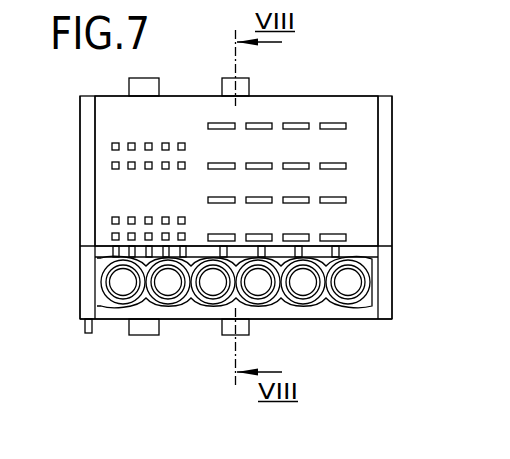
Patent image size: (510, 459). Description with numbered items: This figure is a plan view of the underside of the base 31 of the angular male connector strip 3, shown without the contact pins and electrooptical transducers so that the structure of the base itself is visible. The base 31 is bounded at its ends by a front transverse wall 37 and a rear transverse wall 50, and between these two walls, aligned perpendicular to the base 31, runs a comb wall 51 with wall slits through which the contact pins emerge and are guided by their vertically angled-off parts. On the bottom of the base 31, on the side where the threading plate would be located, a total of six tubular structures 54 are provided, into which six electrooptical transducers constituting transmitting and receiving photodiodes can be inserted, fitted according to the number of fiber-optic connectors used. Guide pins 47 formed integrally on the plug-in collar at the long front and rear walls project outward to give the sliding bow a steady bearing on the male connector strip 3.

The angular male connector strip 3 is at (313, 80).
The base 31 is at (350, 103).
The front transverse wall 37 is at (392, 180).
The guide pins 47 is at (231, 86).
The rear transverse wall 50 is at (80, 175).
The comb wall 51 is at (365, 252).
The tubular structures 54 is at (313, 302).